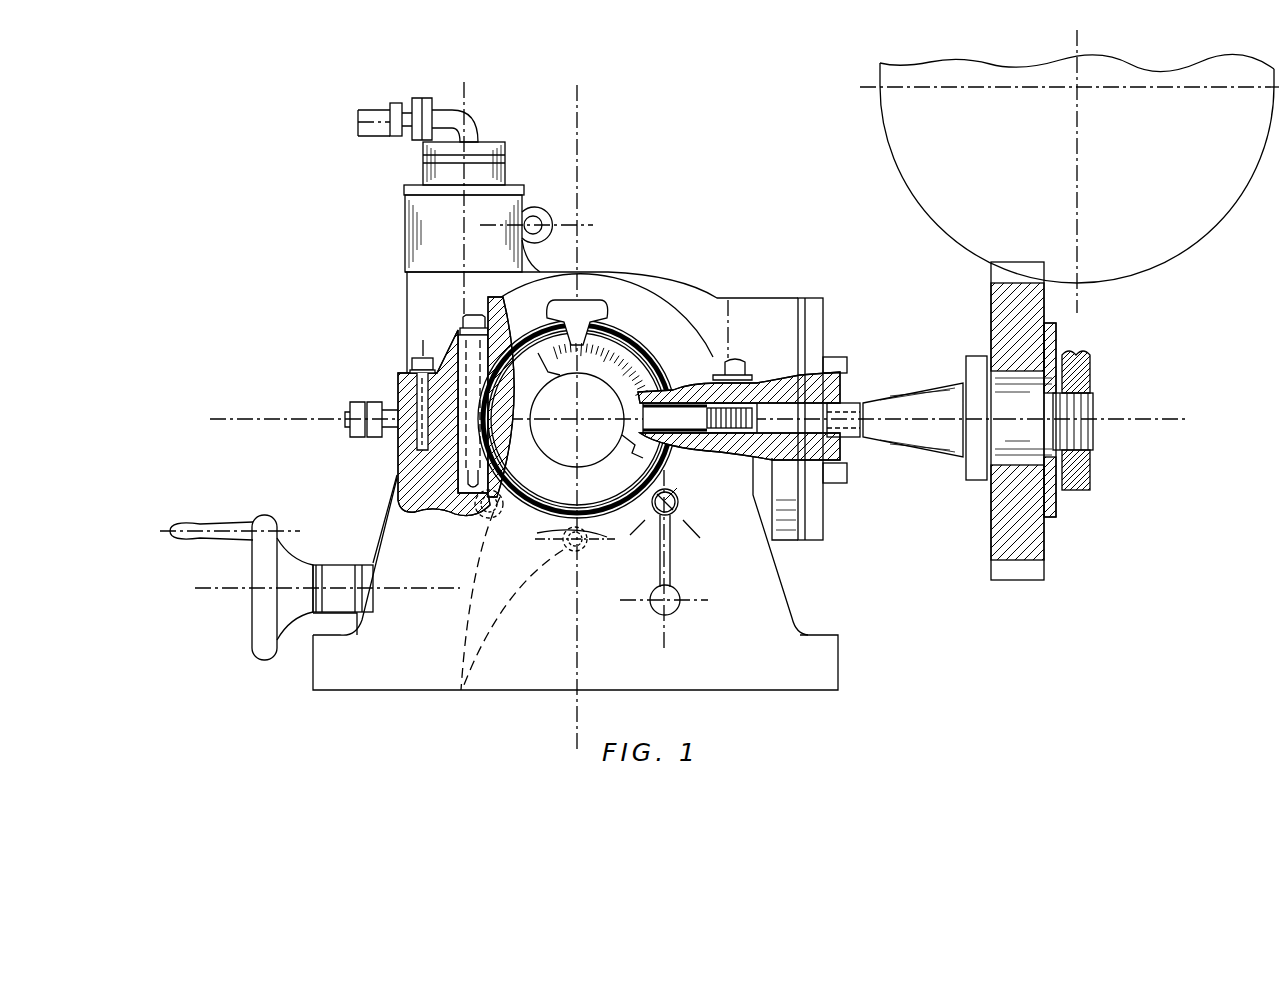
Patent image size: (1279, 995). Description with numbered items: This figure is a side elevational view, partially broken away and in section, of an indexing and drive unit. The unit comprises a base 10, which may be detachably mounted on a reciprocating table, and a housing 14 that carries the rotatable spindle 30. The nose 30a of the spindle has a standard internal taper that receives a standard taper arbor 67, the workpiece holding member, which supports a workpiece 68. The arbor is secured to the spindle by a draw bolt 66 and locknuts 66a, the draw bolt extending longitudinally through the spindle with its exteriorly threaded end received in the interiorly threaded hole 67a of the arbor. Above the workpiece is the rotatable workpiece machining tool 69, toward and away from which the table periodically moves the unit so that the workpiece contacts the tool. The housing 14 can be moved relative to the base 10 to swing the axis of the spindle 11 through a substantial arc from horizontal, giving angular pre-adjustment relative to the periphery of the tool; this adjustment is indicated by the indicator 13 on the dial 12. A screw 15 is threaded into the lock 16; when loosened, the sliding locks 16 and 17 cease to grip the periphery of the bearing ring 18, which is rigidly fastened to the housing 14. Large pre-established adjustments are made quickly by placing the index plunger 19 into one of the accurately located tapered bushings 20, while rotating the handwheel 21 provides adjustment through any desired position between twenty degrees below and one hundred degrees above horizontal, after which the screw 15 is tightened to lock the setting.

The base 10 is at (842, 648).
The axis of the spindle 11 is at (1166, 414).
The dial 12 is at (620, 347).
The indicator 13 is at (590, 302).
The housing 14 is at (770, 297).
The screw 15 is at (462, 320).
The lock 16 is at (400, 380).
The sliding lock 17 is at (423, 348).
The bearing ring 18 is at (467, 462).
The index plunger 19 is at (682, 508).
The tapered bushings 20 is at (527, 610).
The handwheel 21 is at (252, 636).
The spindle 30 is at (774, 465).
The nose of the spindle 30a is at (832, 392).
The draw bolt 66 is at (352, 410).
The locknuts 66a is at (373, 438).
The standard taper arbor 67 is at (967, 480).
The interiorly threaded hole 67a is at (873, 432).
The workpiece 68 is at (1043, 303).
The workpiece machining tool 69 is at (1137, 277).